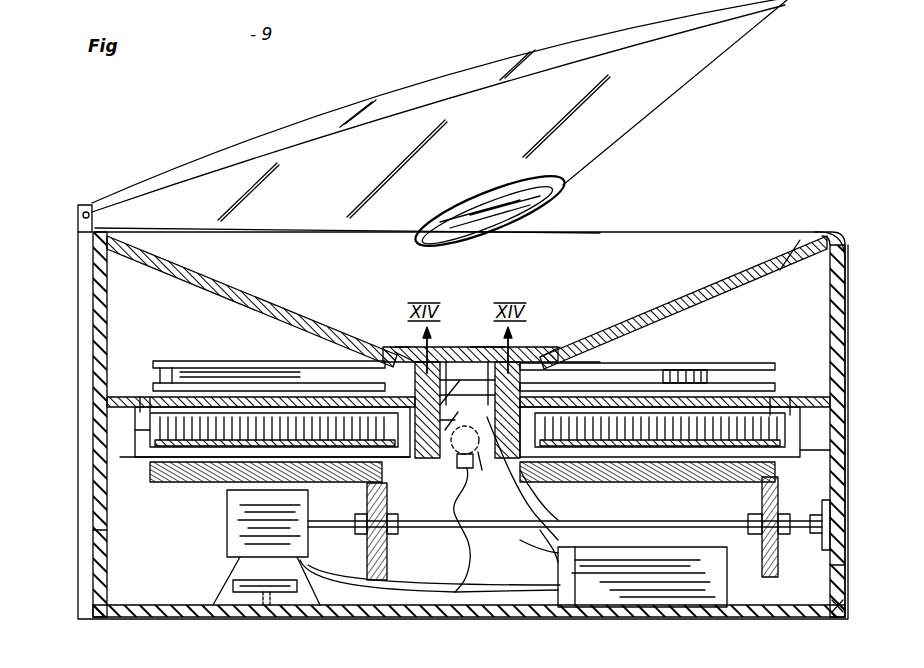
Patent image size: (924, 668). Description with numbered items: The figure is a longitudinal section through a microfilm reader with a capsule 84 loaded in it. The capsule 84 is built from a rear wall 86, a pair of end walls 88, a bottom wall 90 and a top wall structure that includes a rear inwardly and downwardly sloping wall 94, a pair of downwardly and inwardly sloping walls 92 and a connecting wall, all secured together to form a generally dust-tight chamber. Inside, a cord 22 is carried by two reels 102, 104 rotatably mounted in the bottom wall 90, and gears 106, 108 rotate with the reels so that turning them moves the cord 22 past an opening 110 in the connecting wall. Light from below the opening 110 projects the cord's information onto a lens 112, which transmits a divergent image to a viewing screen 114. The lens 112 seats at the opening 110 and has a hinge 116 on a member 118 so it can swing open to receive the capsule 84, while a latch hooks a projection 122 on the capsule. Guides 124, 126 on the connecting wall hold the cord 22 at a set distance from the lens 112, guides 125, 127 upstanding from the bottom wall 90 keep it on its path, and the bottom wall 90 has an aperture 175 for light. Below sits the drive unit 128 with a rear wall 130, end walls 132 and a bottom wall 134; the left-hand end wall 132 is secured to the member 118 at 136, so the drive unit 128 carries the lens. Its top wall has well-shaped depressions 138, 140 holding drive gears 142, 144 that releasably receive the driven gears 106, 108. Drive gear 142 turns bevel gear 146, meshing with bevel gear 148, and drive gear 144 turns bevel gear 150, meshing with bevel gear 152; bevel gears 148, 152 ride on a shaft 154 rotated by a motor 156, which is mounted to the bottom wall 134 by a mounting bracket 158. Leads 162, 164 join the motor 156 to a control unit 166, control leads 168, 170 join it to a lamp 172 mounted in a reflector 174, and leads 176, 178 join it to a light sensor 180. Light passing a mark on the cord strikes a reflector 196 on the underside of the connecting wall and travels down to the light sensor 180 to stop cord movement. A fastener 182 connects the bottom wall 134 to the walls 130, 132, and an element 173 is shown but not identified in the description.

The cord 22 is at (290, 380).
The capsule 84 is at (845, 291).
The rear wall 86 is at (793, 270).
The end walls 88 is at (95, 320).
The bottom wall 90 is at (97, 382).
The downwardly and inwardly sloping walls 92 is at (182, 275).
The rear inwardly and downwardly sloping wall 94 is at (647, 248).
The reel 102 is at (185, 360).
The reel 104 is at (752, 365).
The gear 106 is at (147, 407).
The gear 108 is at (767, 420).
The opening 110 is at (474, 344).
The lens 112 is at (618, 132).
The viewing screen 114 is at (436, 78).
The hinge 116 is at (78, 216).
The member 118 is at (78, 286).
The projection 122 is at (850, 246).
The guide 124 is at (398, 355).
The guide 125 is at (395, 348).
The guide 126 is at (536, 360).
The guide 127 is at (576, 368).
The drive unit 128 is at (845, 550).
The rear wall 130 is at (812, 497).
The end walls 132 is at (95, 534).
The bottom wall 134 is at (140, 605).
The securing connection 136 is at (95, 412).
The well-shaped depression 138 is at (128, 462).
The well-shaped depression 140 is at (846, 452).
The drive gear 142 is at (140, 432).
The drive gear 144 is at (840, 428).
The bevel gear 146 is at (180, 486).
The bevel gear 148 is at (385, 553).
The bevel gear 150 is at (680, 484).
The bevel gear 152 is at (762, 565).
The shaft 154 is at (650, 535).
The motor 156 is at (228, 538).
The mounting bracket 158 is at (282, 612).
The electrical lead 162 is at (452, 597).
The electrical lead 164 is at (420, 597).
The control unit 166 is at (580, 610).
The control lead 168 is at (518, 528).
The control lead 170 is at (530, 550).
The lamp 172 is at (474, 472).
The lamp socket 173 is at (455, 425).
The reflector 174 is at (452, 440).
The aperture 175 is at (462, 412).
The lead 176 is at (603, 524).
The lead 178 is at (560, 555).
The light sensor 180 is at (524, 478).
The fastener 182 is at (838, 600).
The reflector 196 is at (483, 348).